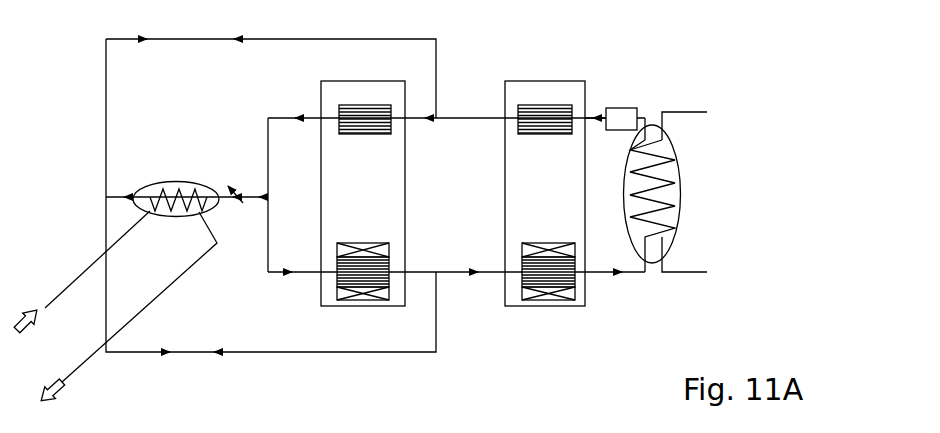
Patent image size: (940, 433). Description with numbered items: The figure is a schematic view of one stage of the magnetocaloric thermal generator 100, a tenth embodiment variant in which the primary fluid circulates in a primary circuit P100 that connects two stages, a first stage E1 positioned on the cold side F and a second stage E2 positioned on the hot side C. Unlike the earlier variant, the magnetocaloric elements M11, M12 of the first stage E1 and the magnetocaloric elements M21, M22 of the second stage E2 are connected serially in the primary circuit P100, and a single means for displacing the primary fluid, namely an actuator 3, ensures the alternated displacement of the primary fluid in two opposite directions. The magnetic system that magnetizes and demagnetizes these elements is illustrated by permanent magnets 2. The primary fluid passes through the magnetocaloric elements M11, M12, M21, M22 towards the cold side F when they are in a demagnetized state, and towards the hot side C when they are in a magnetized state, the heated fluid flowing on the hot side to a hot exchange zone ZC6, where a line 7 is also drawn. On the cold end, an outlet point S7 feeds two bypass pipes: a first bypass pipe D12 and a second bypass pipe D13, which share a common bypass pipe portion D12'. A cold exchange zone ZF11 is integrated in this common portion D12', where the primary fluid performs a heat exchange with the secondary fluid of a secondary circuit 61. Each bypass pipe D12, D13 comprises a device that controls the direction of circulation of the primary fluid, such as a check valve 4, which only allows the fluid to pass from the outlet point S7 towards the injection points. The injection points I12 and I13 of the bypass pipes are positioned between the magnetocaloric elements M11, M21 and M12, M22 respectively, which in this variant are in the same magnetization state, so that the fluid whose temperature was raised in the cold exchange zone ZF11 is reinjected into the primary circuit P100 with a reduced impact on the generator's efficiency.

The magnetocaloric thermal generator 100 is at (838, 93).
The check valve 4 is at (236, 36).
The first bypass pipe D12 is at (271, 60).
The second bypass pipe D13 is at (128, 354).
The common bypass pipe portion D12' is at (151, 172).
The cold side F is at (229, 145).
The cold exchange zone ZF11 is at (168, 181).
The outlet point S7 is at (268, 186).
The secondary circuit 61 is at (45, 303).
The first stage E1 is at (357, 307).
The second stage E2 is at (545, 307).
The injection point I12 is at (438, 118).
The injection point I13 is at (435, 271).
The magnetocaloric element M11 is at (370, 117).
The magnetocaloric element M12 is at (376, 286).
The magnetocaloric element M21 is at (552, 117).
The magnetocaloric element M22 is at (556, 286).
The permanent magnets 2 is at (337, 293).
The actuator 3 is at (622, 114).
The line 7 is at (690, 111).
The hot side C is at (697, 138).
The hot exchange zone ZC6 is at (681, 192).
The primary circuit P100 is at (598, 274).